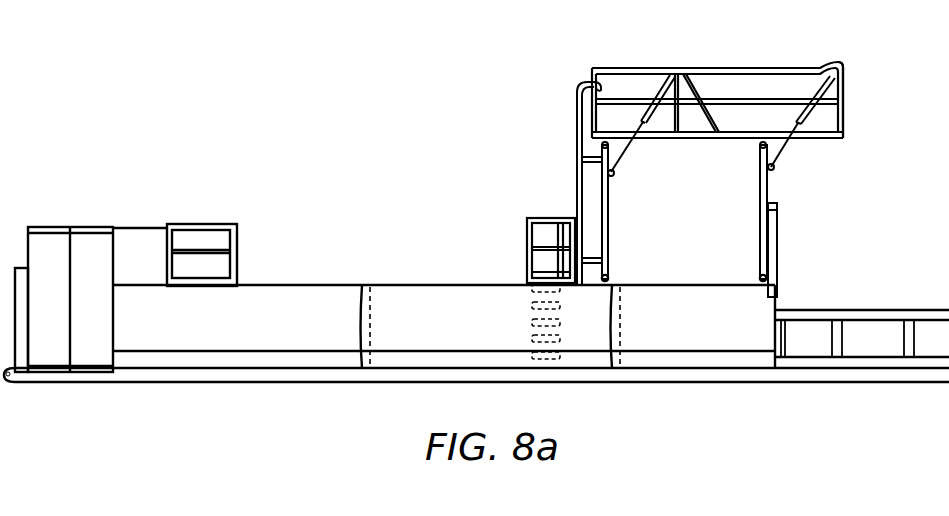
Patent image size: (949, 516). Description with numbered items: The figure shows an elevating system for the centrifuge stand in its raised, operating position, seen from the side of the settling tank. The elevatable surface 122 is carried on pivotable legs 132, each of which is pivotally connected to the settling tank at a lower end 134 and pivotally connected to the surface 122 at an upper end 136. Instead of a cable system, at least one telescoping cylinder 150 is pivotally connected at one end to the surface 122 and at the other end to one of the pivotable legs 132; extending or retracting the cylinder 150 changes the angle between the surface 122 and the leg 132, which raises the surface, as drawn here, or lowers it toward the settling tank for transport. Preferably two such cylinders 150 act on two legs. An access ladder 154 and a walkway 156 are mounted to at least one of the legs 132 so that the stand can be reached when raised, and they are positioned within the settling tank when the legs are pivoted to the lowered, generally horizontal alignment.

The elevatable surface 122 is at (737, 132).
The pivotable legs 132 is at (604, 197).
The lower end of pivotable leg 134 is at (608, 277).
The upper end of pivotable leg 136 is at (600, 143).
The telescoping cylinder 150 is at (812, 112).
The access ladder 154 is at (575, 113).
The walkway 156 is at (543, 272).